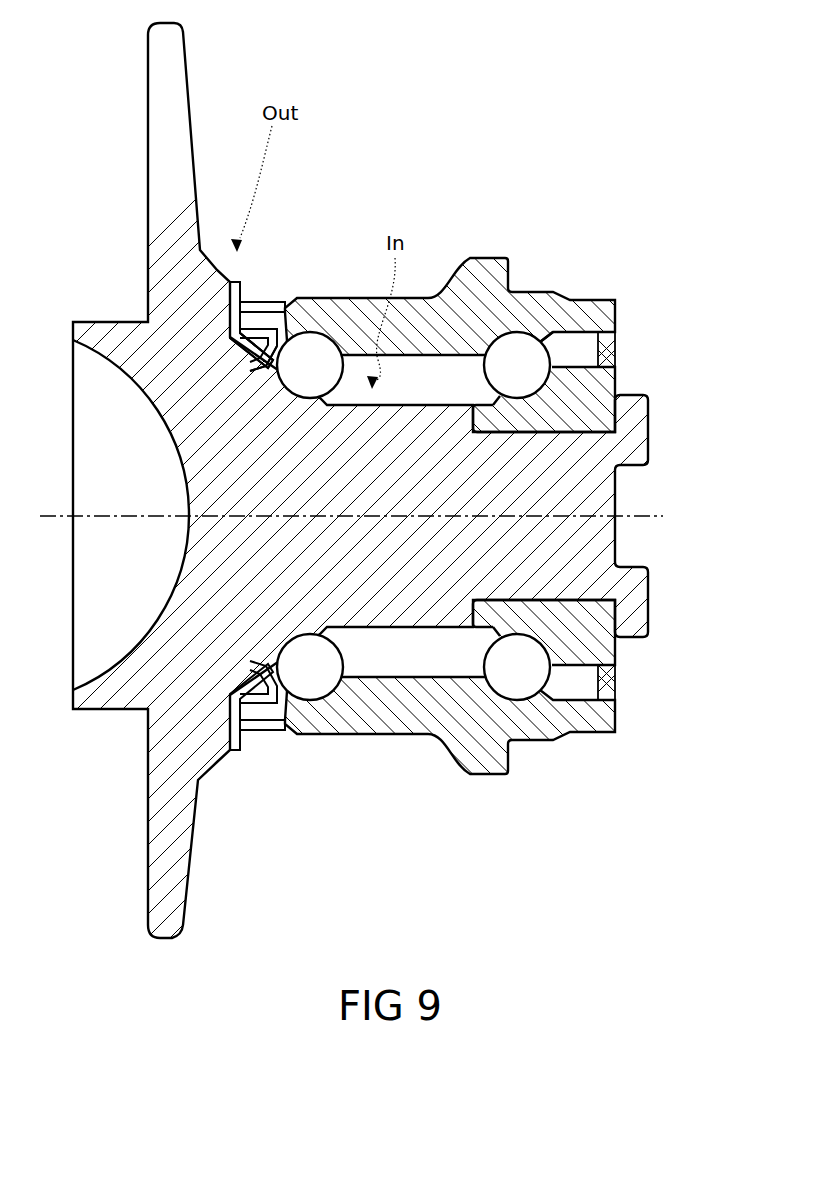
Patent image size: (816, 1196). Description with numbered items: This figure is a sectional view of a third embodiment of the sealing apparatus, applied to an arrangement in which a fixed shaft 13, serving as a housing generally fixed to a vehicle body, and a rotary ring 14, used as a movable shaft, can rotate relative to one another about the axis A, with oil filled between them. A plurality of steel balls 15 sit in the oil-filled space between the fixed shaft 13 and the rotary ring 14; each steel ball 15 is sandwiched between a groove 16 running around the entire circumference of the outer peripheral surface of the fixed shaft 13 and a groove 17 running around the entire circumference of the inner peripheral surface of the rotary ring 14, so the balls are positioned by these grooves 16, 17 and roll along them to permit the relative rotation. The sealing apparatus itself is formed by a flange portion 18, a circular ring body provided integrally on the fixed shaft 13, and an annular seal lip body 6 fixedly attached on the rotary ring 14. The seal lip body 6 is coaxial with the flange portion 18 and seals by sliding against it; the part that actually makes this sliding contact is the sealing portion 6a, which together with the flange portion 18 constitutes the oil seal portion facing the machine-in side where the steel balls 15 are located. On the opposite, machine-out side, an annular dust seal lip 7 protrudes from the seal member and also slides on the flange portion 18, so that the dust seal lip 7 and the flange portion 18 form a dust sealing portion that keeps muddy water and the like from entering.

The seal lip body 6 is at (270, 325).
The sealing portion 6a is at (242, 382).
The dust seal lip 7 is at (227, 332).
The fixed shaft 13 is at (232, 478).
The rotary ring 14 is at (433, 305).
The steel ball 15 is at (312, 345).
The groove 16 is at (618, 383).
The groove 17 is at (512, 328).
The flange portion 18 is at (233, 370).
The axis A is at (648, 500).